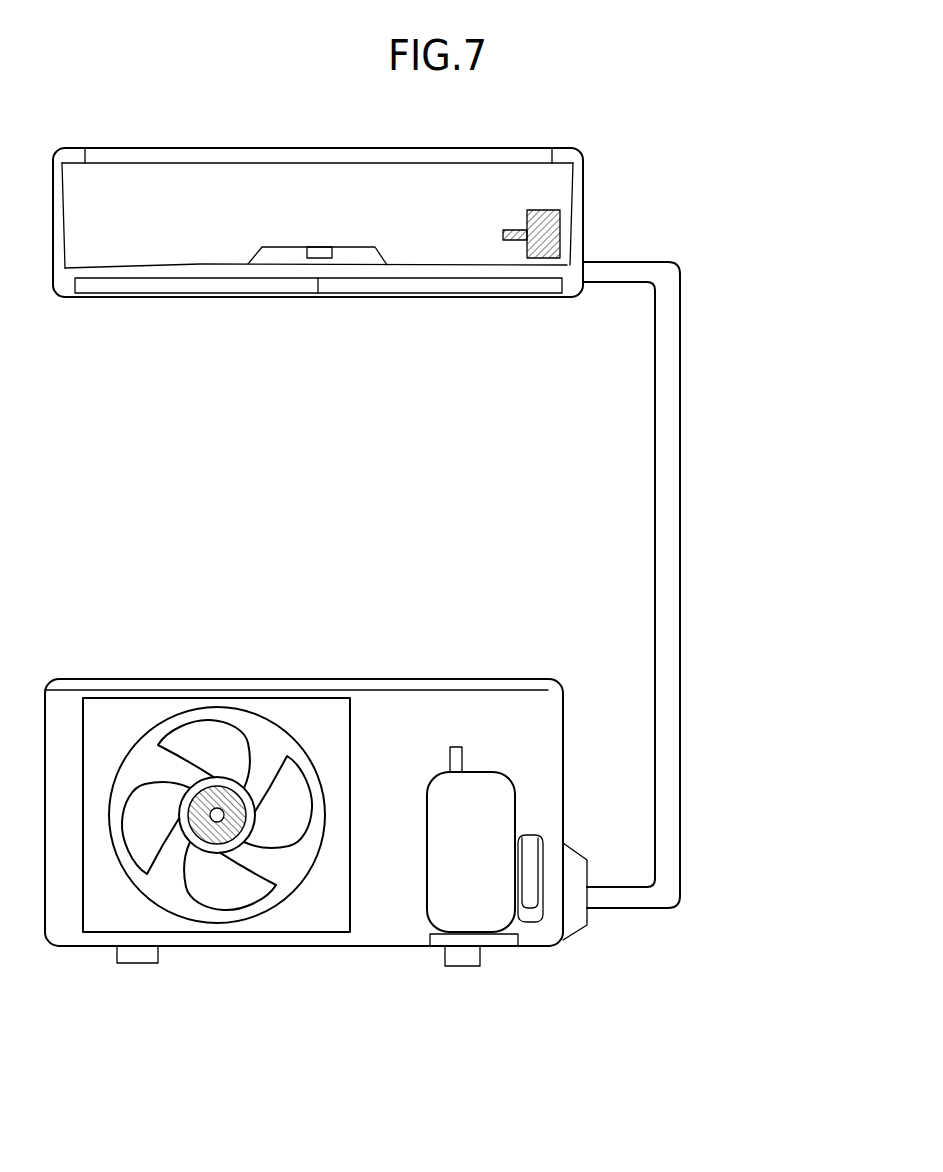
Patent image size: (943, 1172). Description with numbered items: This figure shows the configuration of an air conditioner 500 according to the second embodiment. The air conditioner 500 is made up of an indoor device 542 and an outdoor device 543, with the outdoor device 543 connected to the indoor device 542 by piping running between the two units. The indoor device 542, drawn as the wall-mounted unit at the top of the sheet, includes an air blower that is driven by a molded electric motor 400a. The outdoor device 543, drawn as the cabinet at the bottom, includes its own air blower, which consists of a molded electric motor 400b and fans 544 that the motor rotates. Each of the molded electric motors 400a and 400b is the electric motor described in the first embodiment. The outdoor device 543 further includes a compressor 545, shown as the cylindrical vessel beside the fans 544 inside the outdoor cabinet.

The indoor device 542 is at (188, 284).
The molded electric motor 400a is at (547, 230).
The air conditioner 500 is at (746, 522).
The outdoor device 543 is at (147, 680).
The molded electric motor 400b is at (214, 788).
The fans 544 is at (217, 824).
The compressor 545 is at (463, 917).